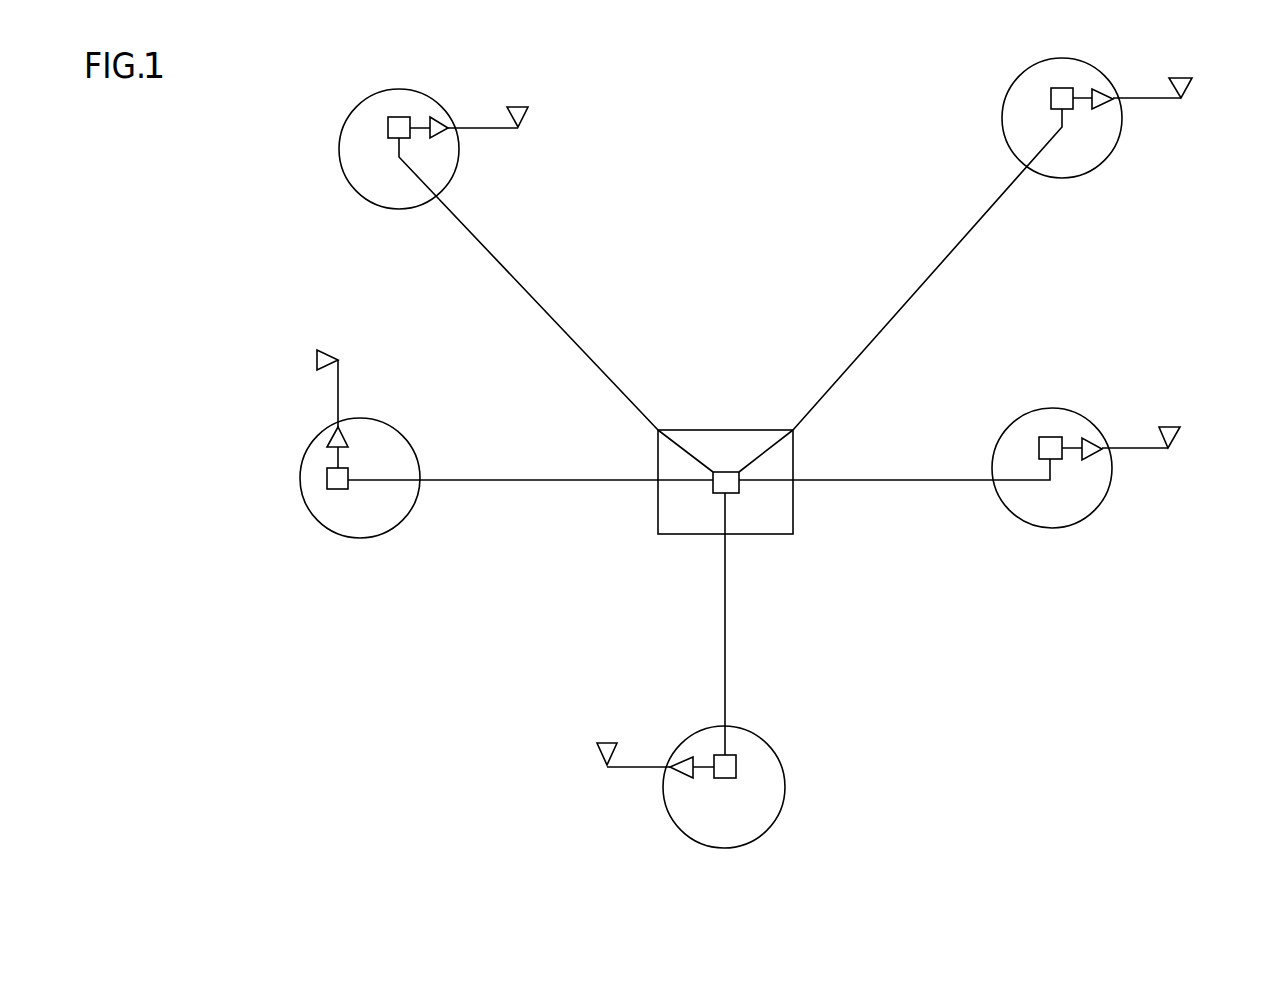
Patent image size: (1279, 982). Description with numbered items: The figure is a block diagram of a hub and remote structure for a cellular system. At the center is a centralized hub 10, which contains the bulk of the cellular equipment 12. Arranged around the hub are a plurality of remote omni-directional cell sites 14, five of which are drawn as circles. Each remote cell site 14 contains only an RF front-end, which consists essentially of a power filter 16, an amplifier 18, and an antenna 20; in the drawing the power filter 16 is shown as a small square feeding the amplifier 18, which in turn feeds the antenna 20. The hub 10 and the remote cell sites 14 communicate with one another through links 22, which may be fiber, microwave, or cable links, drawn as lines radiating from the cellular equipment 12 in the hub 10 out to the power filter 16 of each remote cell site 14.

The centralized hub 10 is at (725, 429).
The cellular equipment 12 is at (710, 485).
The remote cell site 14 is at (372, 202).
The power filter 16 is at (394, 117).
The amplifier 18 is at (438, 122).
The antenna 20 is at (517, 103).
The link 22 is at (558, 323).